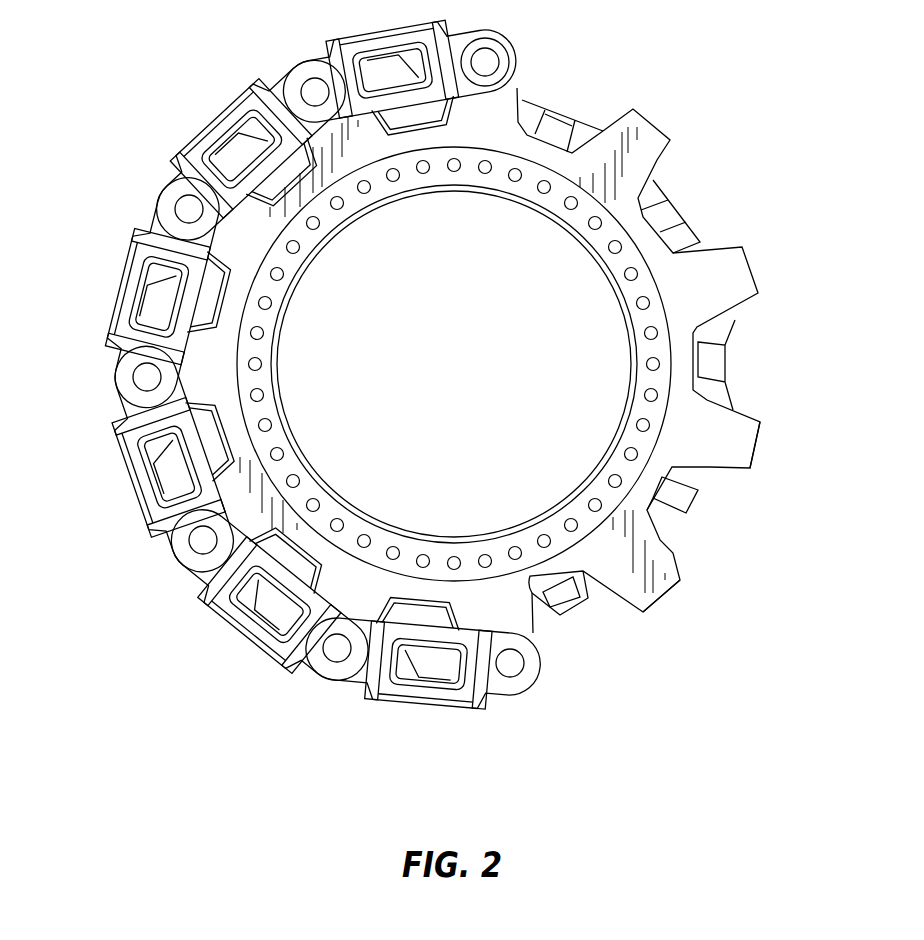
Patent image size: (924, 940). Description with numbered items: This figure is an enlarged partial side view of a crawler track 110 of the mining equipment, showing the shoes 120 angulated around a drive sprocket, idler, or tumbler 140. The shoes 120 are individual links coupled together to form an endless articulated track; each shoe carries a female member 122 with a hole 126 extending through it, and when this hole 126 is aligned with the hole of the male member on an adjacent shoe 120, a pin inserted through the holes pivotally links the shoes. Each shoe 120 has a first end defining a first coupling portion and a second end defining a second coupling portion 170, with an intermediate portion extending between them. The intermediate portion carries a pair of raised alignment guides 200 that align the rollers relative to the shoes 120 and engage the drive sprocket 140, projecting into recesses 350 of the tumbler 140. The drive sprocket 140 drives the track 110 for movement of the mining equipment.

The crawler track 110 is at (327, 421).
The shoe 120 is at (392, 705).
The female member 122 is at (518, 698).
The hole 126 is at (512, 665).
The drive sprocket 140 is at (725, 443).
The second coupling portion 170 is at (521, 620).
The alignment guide 200 is at (427, 615).
The recess 350 is at (673, 555).